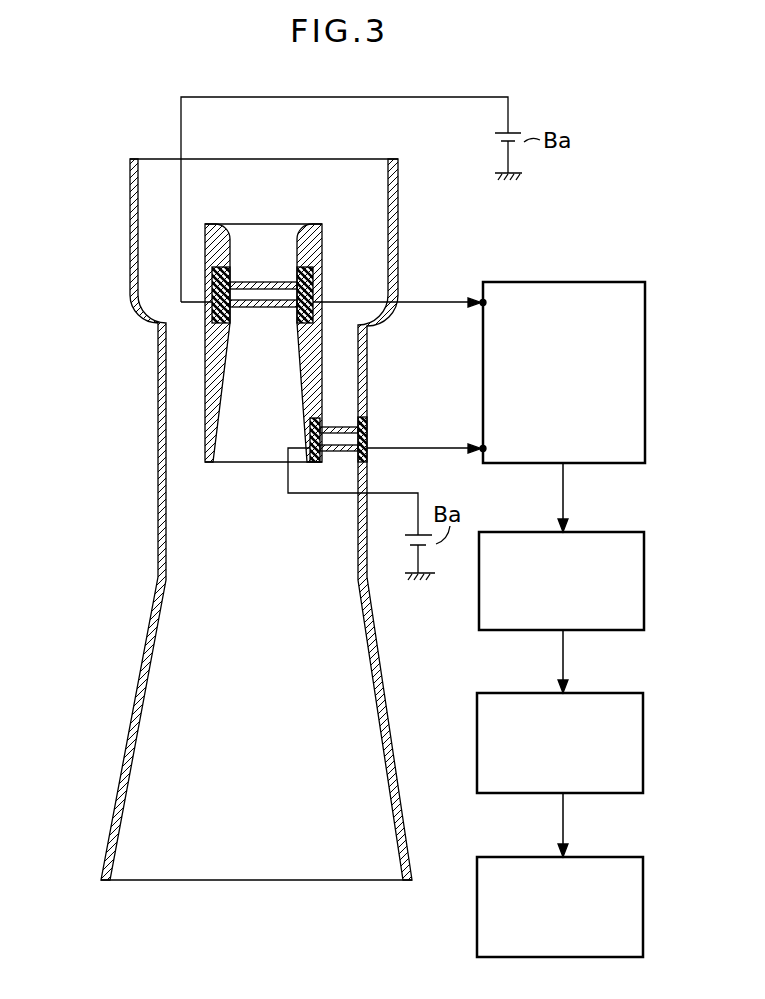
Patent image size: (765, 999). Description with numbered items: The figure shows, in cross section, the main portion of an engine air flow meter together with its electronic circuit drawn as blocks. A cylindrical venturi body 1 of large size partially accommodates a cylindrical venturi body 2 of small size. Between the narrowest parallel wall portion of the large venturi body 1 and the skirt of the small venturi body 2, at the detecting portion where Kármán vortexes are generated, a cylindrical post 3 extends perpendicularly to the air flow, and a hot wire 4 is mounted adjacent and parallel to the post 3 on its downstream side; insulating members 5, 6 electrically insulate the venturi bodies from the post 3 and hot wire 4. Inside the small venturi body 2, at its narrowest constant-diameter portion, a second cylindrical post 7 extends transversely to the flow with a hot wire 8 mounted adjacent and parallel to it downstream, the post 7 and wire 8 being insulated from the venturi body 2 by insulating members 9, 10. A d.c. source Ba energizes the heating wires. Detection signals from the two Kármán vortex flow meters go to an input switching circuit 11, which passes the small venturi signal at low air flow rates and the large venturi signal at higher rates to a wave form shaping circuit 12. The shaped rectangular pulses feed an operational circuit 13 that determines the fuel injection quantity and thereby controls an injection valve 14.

The large size venturi body 1 is at (158, 398).
The small size venturi body 2 is at (207, 360).
The cylindrical post 3 is at (343, 427).
The hot wire 4 is at (352, 452).
The insulating member 5 is at (308, 432).
The insulating member 6 is at (367, 428).
The cylindrical post 7 is at (281, 283).
The hot wire 8 is at (254, 301).
The insulating member 9 is at (213, 276).
The insulating member 10 is at (313, 276).
The input switching circuit 11 is at (598, 282).
The wave form shaping circuit 12 is at (603, 532).
The operational circuit 13 is at (598, 693).
The injection valve 14 is at (598, 857).